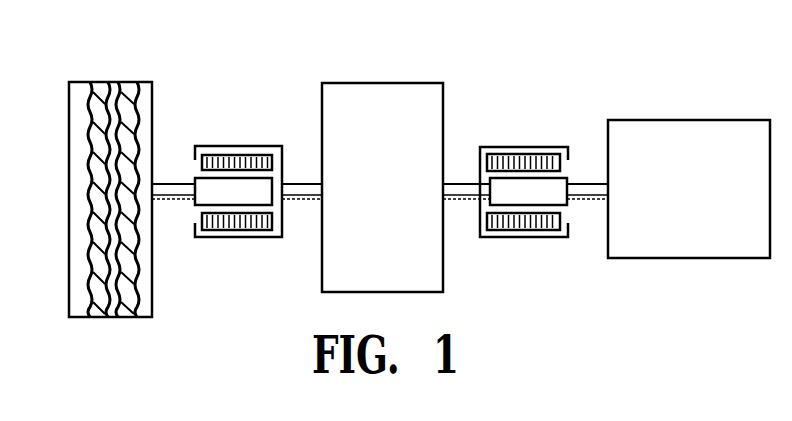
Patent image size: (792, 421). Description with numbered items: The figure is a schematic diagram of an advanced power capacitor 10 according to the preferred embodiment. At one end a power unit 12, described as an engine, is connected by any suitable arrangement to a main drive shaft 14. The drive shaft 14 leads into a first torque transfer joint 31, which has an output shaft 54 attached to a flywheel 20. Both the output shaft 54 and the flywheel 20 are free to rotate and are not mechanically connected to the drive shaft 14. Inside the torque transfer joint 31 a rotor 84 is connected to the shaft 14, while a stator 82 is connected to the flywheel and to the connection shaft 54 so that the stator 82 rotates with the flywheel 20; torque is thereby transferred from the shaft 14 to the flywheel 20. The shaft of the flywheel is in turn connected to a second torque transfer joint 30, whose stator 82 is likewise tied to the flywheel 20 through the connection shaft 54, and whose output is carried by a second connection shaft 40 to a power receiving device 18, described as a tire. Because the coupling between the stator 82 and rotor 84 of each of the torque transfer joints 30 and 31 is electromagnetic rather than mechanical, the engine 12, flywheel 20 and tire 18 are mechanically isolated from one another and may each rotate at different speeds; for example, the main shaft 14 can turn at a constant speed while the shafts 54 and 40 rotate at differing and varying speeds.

The advanced power capacitor 10 is at (336, 58).
The power unit 12 is at (707, 120).
The main drive shaft 14 is at (592, 183).
The power receiving device 18 is at (116, 82).
The flywheel 20 is at (390, 83).
The second torque transfer joint 30 is at (230, 147).
The first torque transfer joint 31 is at (510, 147).
The second connection shaft 40 is at (172, 183).
The output shaft 54 is at (455, 183).
The stator 82 is at (268, 160).
The rotor 84 is at (251, 197).